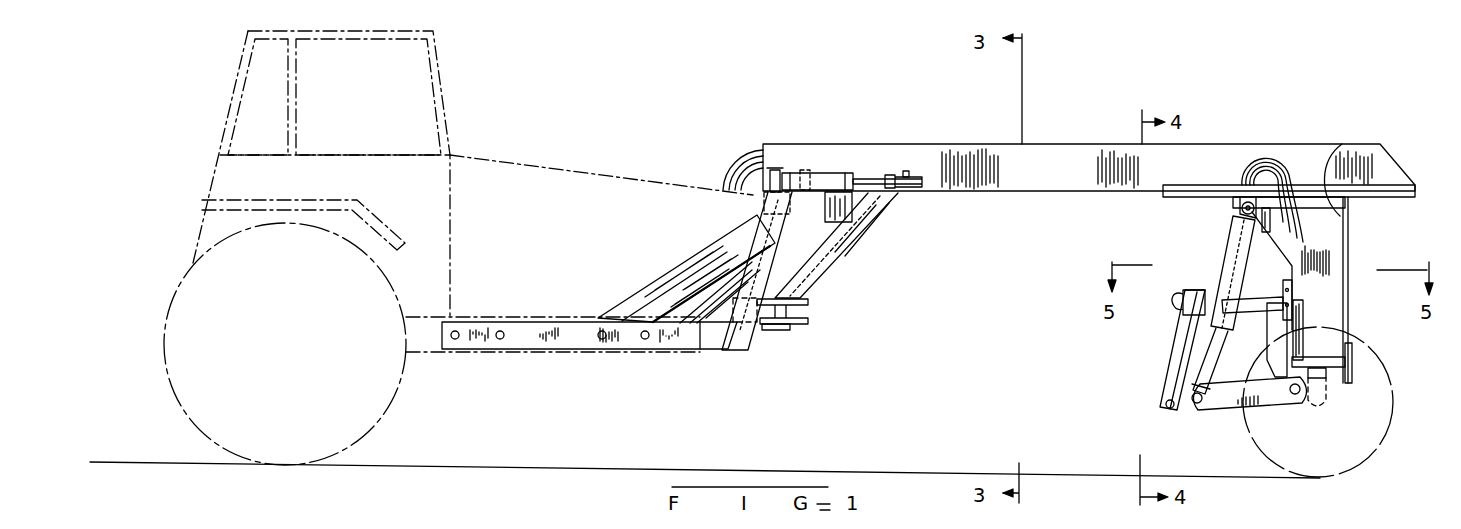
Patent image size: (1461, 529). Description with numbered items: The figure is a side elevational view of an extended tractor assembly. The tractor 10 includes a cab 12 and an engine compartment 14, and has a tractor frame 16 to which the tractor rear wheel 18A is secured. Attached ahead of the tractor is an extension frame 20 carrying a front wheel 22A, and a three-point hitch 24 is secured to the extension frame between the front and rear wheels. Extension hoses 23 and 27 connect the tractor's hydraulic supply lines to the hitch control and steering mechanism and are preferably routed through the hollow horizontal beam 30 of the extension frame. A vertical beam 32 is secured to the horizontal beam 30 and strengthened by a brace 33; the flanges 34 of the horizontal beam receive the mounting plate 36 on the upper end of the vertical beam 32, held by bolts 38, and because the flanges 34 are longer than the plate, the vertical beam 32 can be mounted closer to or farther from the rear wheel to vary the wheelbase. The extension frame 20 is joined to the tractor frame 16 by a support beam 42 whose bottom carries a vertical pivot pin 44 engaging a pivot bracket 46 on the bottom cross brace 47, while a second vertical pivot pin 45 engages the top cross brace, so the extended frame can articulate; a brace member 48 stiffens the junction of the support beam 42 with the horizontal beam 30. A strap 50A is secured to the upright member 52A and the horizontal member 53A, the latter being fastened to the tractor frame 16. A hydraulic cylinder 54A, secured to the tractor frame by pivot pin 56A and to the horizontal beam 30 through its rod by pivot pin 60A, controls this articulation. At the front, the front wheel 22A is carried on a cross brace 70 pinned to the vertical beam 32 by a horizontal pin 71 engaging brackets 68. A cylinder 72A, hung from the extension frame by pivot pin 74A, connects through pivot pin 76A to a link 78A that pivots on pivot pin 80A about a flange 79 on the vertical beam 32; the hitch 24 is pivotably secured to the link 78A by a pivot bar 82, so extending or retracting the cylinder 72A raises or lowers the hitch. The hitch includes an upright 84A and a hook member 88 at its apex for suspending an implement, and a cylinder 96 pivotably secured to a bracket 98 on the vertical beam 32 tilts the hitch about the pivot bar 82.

The tractor 10 is at (541, 87).
The cab 12 is at (235, 83).
The engine compartment 14 is at (542, 238).
The tractor frame 16 is at (507, 353).
The tractor rear wheel 18A is at (186, 420).
The extension frame 20 is at (1304, 137).
The front wheel 22A is at (1382, 420).
The extension hose 23 is at (748, 165).
The three-point hitch 24 is at (1155, 354).
The extension hose 27 is at (1291, 165).
The horizontal beam 30 is at (1040, 160).
The vertical beam 32 is at (1328, 262).
The brace 33 is at (1285, 245).
The flange 34 is at (1388, 185).
The mounting plate 36 is at (1340, 213).
The bolt 38 is at (1332, 185).
The support beam 42 is at (860, 220).
The vertical pivot pin 44 is at (810, 310).
The second vertical pivot pin 45 is at (812, 172).
The pivot bracket 46 is at (768, 332).
The cross brace 47 is at (730, 338).
The brace member 48 is at (858, 205).
The strap 50A is at (703, 278).
The upright member 52A is at (760, 240).
The horizontal member 53A is at (617, 340).
The hydraulic cylinder 54A is at (832, 172).
The pivot pin 56A is at (775, 168).
The pivot pin 60A is at (905, 176).
The bracket 68 is at (1354, 386).
The cross brace 70 is at (1332, 385).
The horizontal pin 71 is at (1350, 362).
The cylinder 72A is at (1232, 252).
The pivot pin 74A is at (1240, 212).
The pivot pin 76A is at (1196, 404).
The link 78A is at (1226, 412).
The flange 79 is at (1268, 362).
The pivot pin 80A is at (1296, 394).
The pivot bar 82 is at (1164, 405).
The upright 84A is at (1185, 336).
The hook member 88 is at (1182, 300).
The cylinder 96 is at (1257, 302).
The bracket 98 is at (1294, 287).